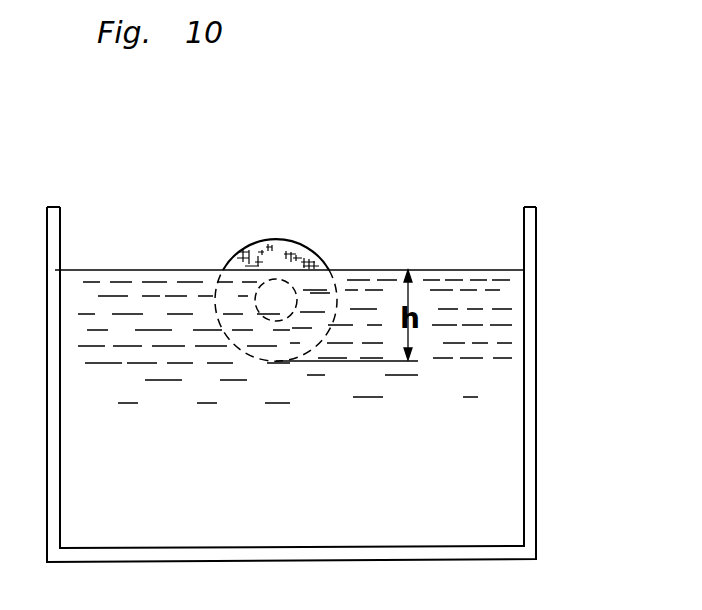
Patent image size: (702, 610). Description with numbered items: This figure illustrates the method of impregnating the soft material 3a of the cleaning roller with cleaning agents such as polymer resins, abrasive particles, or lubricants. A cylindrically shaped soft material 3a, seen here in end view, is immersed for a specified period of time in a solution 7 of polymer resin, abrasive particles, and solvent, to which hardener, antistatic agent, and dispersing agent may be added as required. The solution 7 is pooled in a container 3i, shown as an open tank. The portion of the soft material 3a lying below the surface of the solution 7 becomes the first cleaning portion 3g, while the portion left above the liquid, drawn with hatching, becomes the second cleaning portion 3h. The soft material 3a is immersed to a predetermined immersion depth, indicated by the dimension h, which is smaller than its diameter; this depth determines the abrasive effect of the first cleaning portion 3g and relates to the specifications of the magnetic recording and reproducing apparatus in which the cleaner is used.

The solution 7 is at (115, 307).
The first cleaning portion 3g is at (225, 296).
The second cleaning portion 3h is at (272, 242).
The soft material 3a is at (334, 266).
The container 3i is at (528, 222).